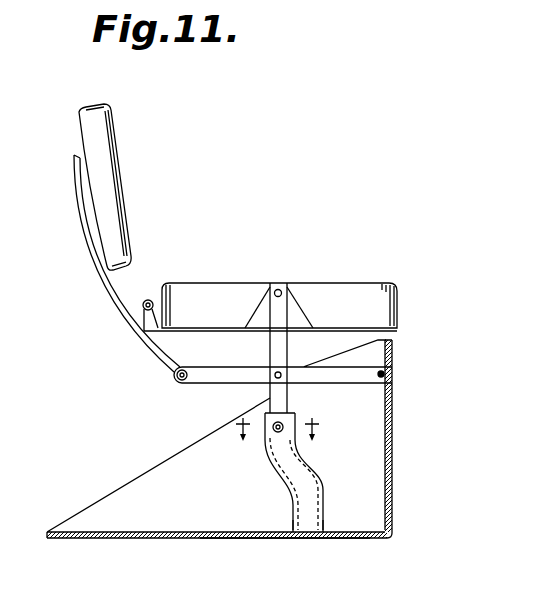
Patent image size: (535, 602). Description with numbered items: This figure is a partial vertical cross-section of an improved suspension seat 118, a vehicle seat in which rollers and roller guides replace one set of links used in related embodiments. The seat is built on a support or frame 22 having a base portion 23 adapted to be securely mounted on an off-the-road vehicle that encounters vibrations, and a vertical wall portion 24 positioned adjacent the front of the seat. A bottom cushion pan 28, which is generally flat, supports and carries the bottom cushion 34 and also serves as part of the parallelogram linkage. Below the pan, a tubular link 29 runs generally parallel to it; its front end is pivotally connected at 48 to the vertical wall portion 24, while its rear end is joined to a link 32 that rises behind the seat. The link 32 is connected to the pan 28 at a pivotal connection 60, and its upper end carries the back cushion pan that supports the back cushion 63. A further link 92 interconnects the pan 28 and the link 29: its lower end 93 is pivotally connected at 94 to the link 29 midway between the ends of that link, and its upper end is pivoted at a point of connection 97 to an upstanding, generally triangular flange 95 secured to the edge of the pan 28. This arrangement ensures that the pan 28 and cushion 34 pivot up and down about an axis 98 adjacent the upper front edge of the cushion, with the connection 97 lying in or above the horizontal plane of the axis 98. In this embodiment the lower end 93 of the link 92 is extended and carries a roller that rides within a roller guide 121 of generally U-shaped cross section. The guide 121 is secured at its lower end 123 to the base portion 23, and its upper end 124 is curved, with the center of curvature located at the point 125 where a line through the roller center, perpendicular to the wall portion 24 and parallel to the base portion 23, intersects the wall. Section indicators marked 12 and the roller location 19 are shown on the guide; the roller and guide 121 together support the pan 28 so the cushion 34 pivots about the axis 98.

The section line 12 is at (284, 432).
The pivot pin 19 is at (262, 447).
The support or frame 22 is at (206, 538).
The base portion 23 is at (276, 539).
The vertical wall portion 24 is at (392, 484).
The bottom cushion pan 28 is at (179, 326).
The link 29 is at (303, 367).
The link 32 is at (77, 187).
The bottom cushion 34 is at (228, 283).
The pivotal connection 48 is at (386, 373).
The pivotal connection 60 is at (150, 299).
The back cushion 63 is at (112, 135).
The link 92 is at (268, 342).
The lower end 93 is at (268, 398).
The pivotal connection 94 is at (284, 377).
The flange 95 is at (306, 312).
The point of connection 97 is at (280, 289).
The axis 98 is at (384, 285).
The suspension seat 118 is at (242, 243).
The roller guide 121 is at (275, 485).
The lower end 123 is at (324, 522).
The upper end 124 is at (315, 470).
The point 125 is at (385, 420).